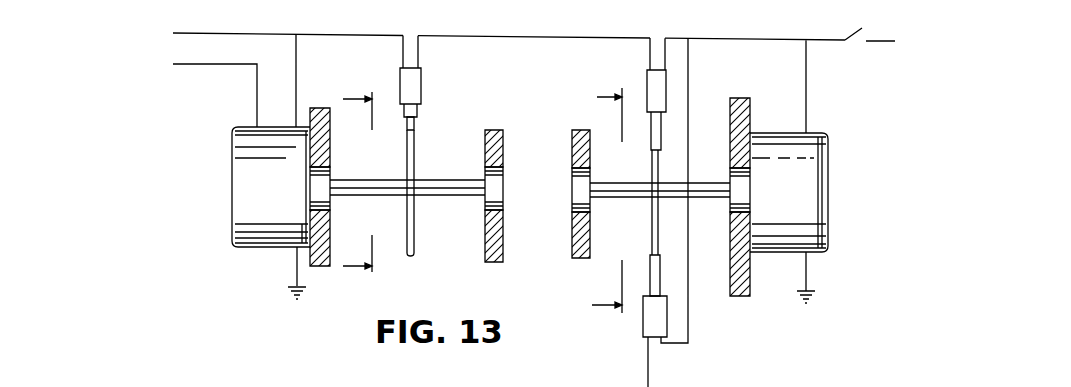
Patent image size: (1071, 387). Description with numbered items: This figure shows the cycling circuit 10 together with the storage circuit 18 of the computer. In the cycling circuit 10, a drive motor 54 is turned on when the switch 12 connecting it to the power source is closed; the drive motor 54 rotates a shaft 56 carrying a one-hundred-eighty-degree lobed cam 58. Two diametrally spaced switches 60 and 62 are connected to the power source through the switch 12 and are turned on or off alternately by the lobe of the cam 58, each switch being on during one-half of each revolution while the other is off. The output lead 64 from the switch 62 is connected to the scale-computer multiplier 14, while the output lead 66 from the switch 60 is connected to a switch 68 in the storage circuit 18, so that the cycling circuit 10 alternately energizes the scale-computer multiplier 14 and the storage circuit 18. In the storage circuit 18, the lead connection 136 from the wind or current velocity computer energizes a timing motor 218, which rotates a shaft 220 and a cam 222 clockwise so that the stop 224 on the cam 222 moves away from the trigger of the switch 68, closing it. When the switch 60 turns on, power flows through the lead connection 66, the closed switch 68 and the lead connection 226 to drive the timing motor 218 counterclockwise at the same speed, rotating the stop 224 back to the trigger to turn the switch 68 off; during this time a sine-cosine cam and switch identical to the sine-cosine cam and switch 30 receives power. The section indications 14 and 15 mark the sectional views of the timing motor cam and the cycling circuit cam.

The cycling circuit 10 is at (813, 327).
The switch 12 is at (855, 33).
The scale-computer multiplier 14 is at (357, 189).
The section line 15 is at (607, 203).
The storage circuit 18 is at (217, 255).
The sine-cosine cam and switch 30 is at (242, 377).
The drive motor 54 is at (820, 218).
The shaft 56 is at (711, 197).
The lobed cam 58 is at (652, 218).
The switch 60 is at (650, 80).
The switch 62 is at (651, 320).
The output lead 64 is at (650, 373).
The output lead 66 is at (497, 37).
The switch 68 is at (420, 92).
The lead connection 136 is at (257, 90).
The timing motor 218 is at (232, 180).
The shaft 220 is at (373, 177).
The cam 222 is at (415, 217).
The stop 224 is at (415, 124).
The lead connection 226 is at (342, 33).